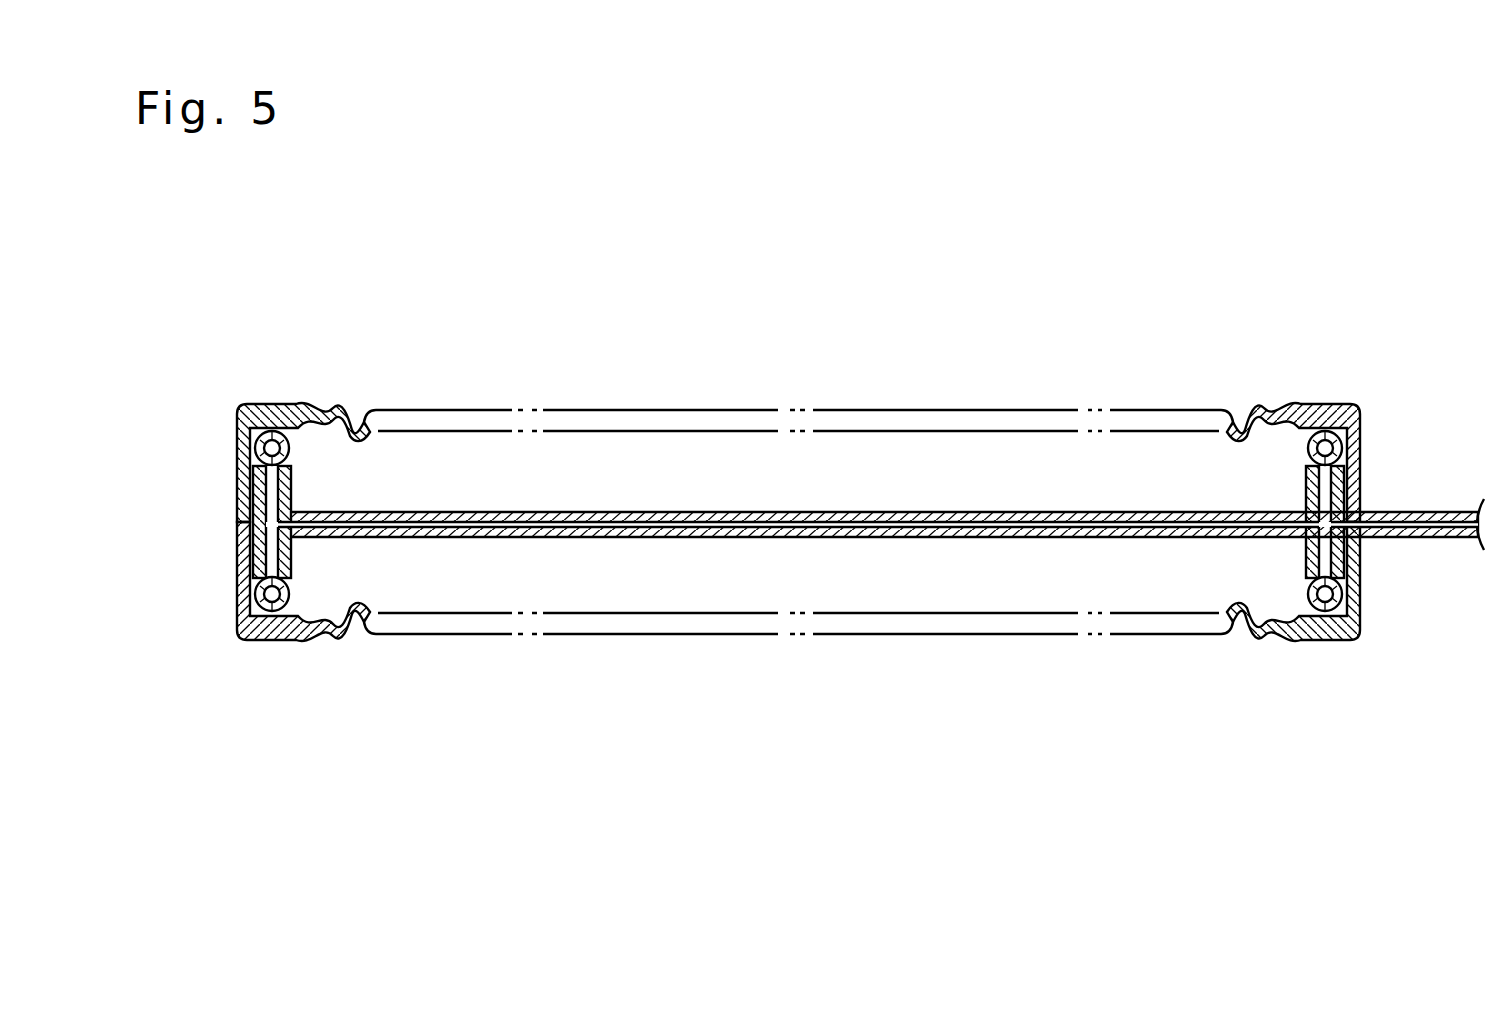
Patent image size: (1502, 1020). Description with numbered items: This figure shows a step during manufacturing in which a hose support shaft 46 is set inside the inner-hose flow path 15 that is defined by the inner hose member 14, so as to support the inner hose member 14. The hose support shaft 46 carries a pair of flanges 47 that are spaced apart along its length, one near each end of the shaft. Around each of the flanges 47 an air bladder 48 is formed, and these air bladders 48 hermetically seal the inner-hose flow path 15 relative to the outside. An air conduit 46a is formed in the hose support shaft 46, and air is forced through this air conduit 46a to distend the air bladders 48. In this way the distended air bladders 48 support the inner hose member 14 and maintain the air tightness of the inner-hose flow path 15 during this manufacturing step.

The inner hose member 14 is at (339, 398).
The inner-hose flow path 15 is at (998, 594).
The hose support shaft 46 is at (672, 538).
The air conduit 46a is at (839, 528).
The flange 47 is at (290, 562).
The air bladder 48 is at (290, 441).